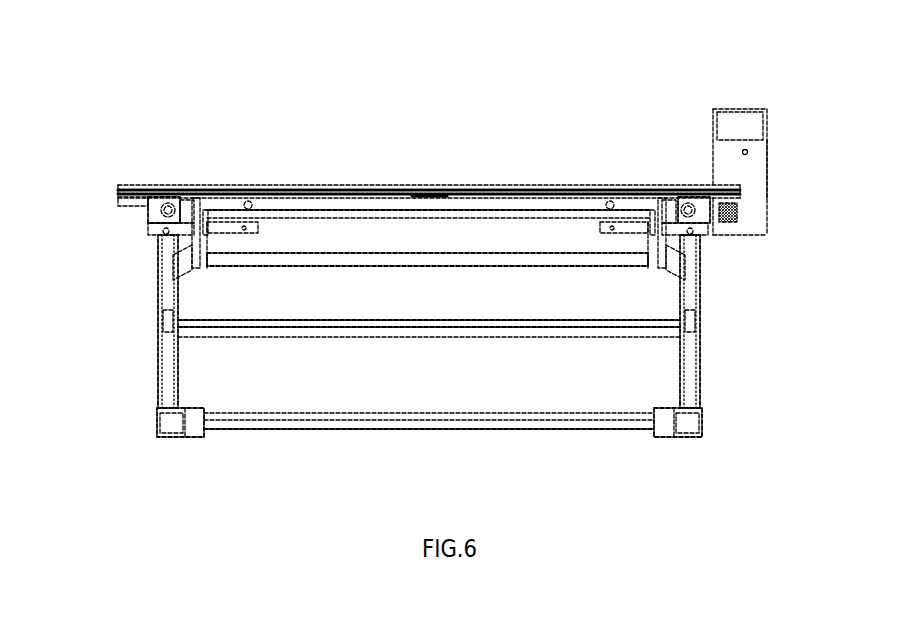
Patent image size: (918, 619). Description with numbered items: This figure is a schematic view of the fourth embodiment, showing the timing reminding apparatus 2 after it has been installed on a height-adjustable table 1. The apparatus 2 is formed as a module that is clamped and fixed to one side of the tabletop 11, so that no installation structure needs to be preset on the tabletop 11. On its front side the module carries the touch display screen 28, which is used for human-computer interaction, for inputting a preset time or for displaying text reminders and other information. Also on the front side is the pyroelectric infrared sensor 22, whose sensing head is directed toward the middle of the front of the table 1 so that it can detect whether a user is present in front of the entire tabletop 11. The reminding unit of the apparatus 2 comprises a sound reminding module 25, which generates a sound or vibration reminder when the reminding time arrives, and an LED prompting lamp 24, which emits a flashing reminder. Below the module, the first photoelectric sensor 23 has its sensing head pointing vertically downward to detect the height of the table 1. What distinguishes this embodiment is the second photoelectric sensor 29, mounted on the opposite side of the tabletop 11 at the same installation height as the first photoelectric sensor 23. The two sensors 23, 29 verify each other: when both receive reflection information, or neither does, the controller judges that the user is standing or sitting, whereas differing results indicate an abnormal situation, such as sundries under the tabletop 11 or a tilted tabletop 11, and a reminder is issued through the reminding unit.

The height-adjustable table 1 is at (387, 317).
The tabletop 11 is at (429, 140).
The second photoelectric sensor 29 is at (97, 172).
The timing reminding apparatus 2 is at (741, 151).
The pyroelectric infrared sensor 22 is at (792, 108).
The first photoelectric sensor 23 is at (780, 249).
The LED prompting lamp 24 is at (805, 178).
The sound reminding module 25 is at (764, 133).
The touch display screen 28 is at (671, 123).